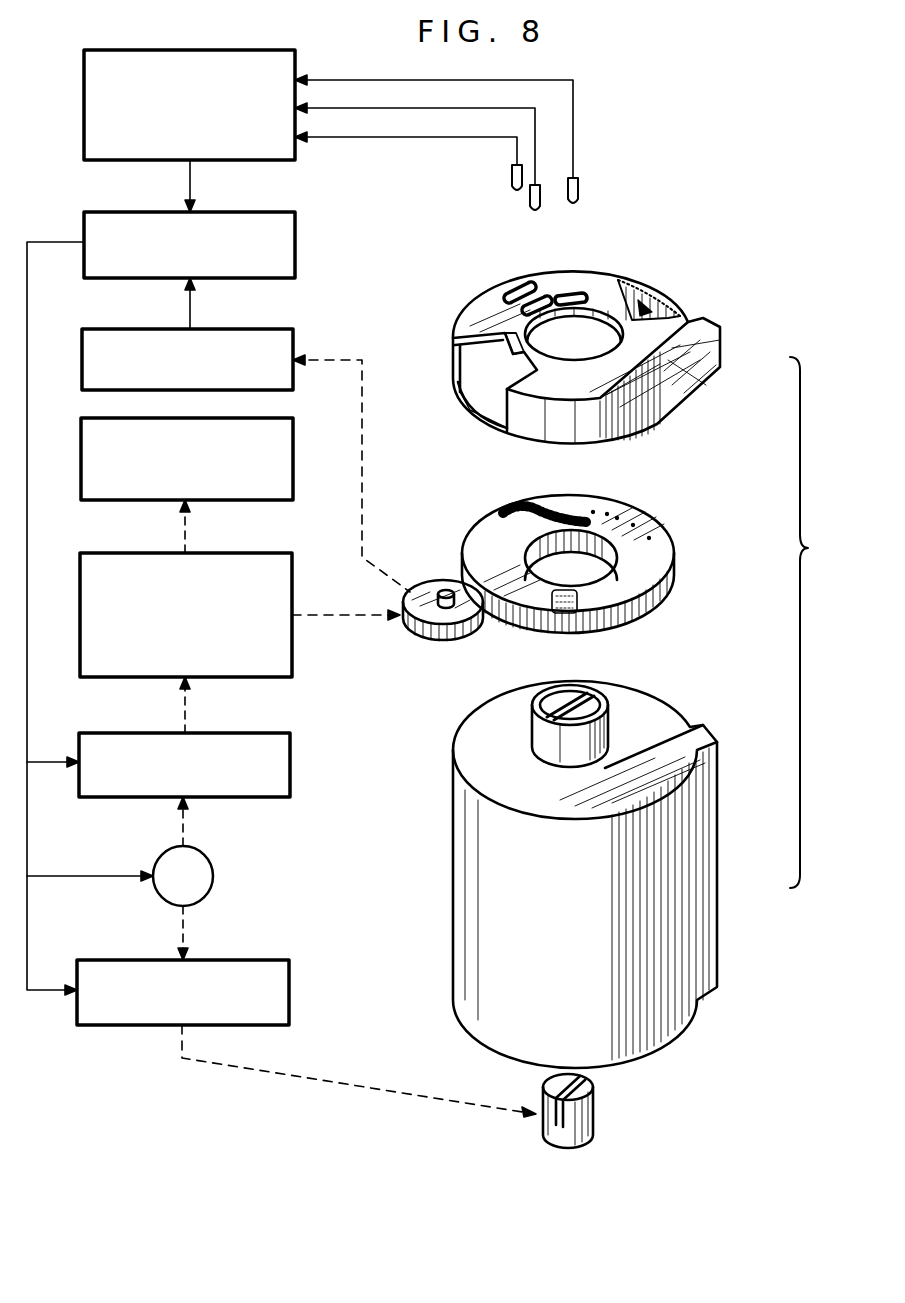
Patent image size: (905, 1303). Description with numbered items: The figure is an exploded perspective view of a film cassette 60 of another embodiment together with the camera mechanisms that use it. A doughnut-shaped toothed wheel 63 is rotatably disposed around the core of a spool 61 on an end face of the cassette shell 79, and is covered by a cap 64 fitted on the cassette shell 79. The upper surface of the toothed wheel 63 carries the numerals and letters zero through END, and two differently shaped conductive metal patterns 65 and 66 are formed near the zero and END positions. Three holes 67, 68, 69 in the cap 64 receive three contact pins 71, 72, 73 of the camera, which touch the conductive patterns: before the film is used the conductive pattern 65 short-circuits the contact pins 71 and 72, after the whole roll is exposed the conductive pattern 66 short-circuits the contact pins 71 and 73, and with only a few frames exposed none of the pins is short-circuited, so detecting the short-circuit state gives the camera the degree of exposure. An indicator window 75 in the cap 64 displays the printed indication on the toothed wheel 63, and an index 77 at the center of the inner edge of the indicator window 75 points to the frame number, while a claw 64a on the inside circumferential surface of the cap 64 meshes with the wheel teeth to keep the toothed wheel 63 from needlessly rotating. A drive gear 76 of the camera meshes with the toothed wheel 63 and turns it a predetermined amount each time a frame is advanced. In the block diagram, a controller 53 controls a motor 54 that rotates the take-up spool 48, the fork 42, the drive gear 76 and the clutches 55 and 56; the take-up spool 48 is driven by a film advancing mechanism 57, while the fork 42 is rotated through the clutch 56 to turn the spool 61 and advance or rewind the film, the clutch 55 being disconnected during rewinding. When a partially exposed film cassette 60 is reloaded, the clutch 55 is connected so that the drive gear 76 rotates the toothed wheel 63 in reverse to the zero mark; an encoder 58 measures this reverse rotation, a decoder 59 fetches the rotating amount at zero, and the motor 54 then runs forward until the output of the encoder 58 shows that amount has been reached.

The fork 42 is at (595, 1118).
The take-up spool 48 is at (293, 468).
The controller 53 is at (295, 246).
The motor 54 is at (213, 882).
The clutch 55 is at (290, 765).
The clutch 56 is at (136, 1026).
The film advancing mechanism 57 is at (292, 640).
The encoder 58 is at (295, 340).
The decoder 59 is at (297, 156).
The film cassette 60 is at (819, 622).
The spool 61 is at (610, 713).
The toothed wheel 63 is at (676, 552).
The cap 64 is at (697, 390).
The claw 64a is at (657, 298).
The conductive metal pattern 65 is at (552, 606).
The conductive metal pattern 66 is at (512, 510).
The hole 67 is at (514, 283).
The hole 68 is at (543, 298).
The hole 69 is at (580, 292).
The contact pin 71 is at (510, 180).
The contact pin 72 is at (528, 200).
The contact pin 73 is at (580, 192).
The indicator window 75 is at (477, 410).
The drive gear 76 is at (433, 580).
The index 77 is at (512, 342).
The cassette shell 79 is at (705, 863).